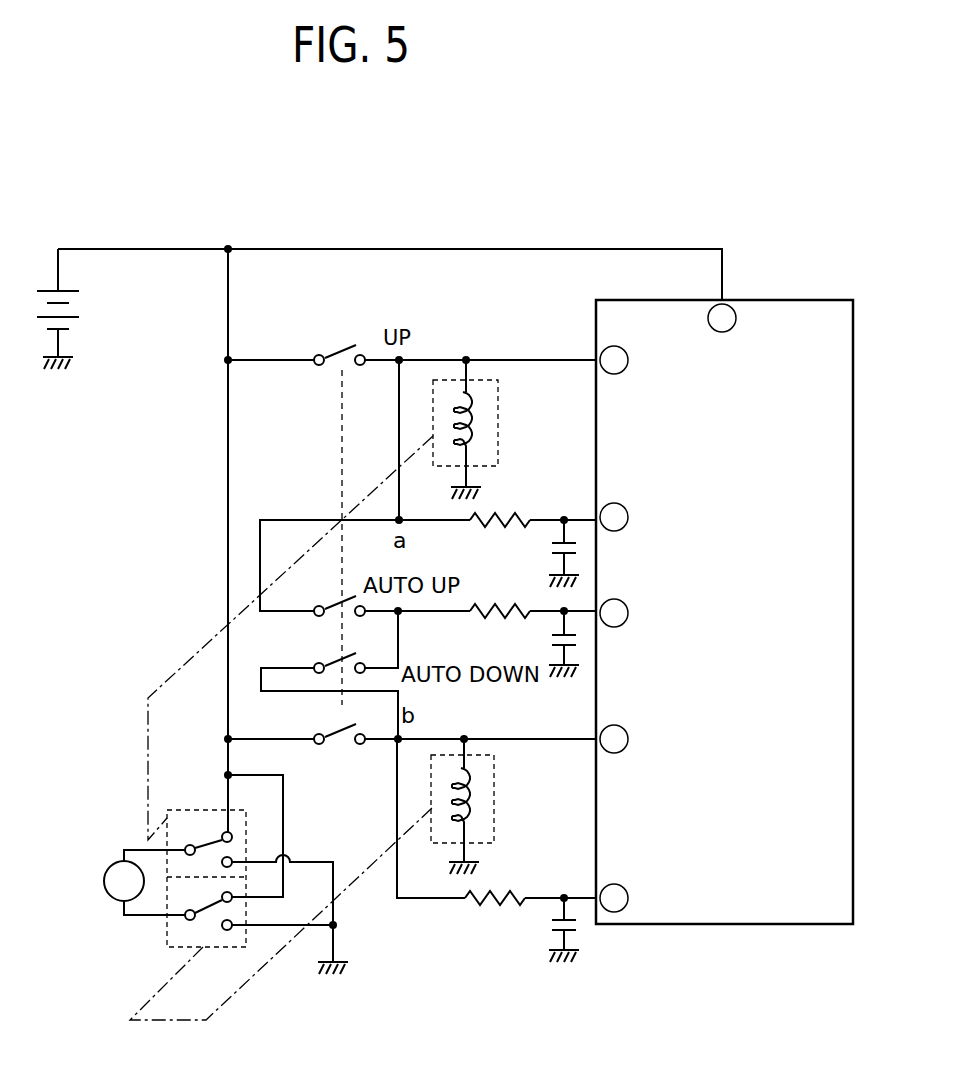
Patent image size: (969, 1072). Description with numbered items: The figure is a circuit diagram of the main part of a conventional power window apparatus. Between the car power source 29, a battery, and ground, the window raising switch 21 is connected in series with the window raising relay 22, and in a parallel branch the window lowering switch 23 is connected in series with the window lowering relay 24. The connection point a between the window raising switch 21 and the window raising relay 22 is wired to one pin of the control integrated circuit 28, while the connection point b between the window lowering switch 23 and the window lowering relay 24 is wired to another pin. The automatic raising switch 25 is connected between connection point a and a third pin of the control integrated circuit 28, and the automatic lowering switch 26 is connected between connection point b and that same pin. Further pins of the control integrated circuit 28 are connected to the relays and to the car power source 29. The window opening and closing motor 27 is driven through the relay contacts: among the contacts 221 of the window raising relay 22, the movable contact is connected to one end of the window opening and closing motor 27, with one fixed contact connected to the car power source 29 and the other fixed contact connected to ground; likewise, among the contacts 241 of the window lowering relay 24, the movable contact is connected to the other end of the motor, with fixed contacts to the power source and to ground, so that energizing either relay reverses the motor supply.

The window raising switch 21 is at (344, 343).
The window raising relay 22 is at (498, 426).
The window lowering switch 23 is at (342, 749).
The window lowering relay 24 is at (494, 795).
The automatic raising switch 25 is at (343, 612).
The automatic lowering switch 26 is at (338, 655).
The window opening and closing motor 27 is at (108, 866).
The control integrated circuit 28 is at (806, 300).
The car power source 29 is at (83, 310).
The contacts of the window raising relay 221 is at (190, 805).
The contacts of the window lowering relay 241 is at (167, 941).